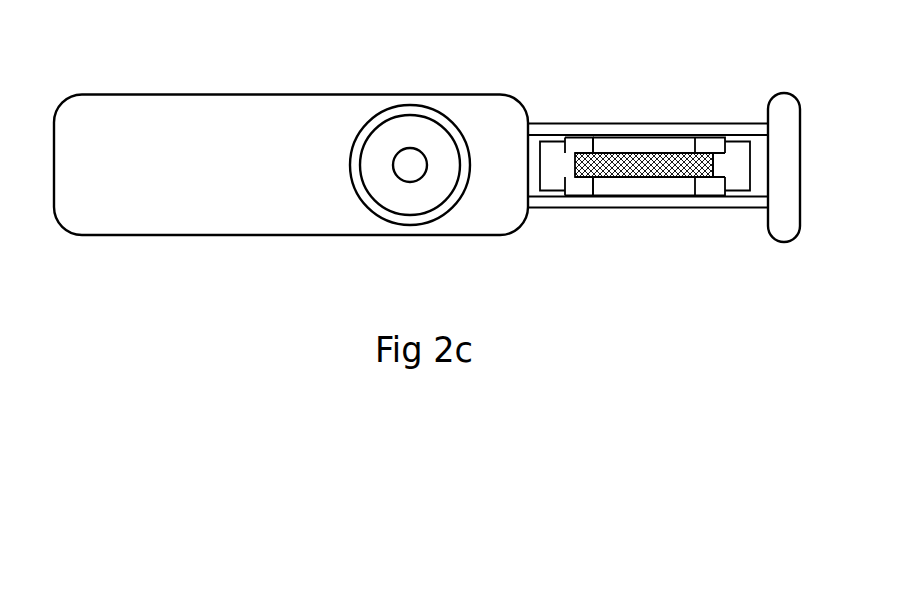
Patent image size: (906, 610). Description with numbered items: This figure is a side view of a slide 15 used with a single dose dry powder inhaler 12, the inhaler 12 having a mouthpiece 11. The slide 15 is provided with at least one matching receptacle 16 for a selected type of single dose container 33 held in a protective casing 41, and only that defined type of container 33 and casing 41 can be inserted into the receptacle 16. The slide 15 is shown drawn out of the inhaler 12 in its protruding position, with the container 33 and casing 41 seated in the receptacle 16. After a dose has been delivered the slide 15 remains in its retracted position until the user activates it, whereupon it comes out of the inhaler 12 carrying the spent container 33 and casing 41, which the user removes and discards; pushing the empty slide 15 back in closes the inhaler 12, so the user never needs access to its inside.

The inhaler 12 is at (230, 160).
The mouthpiece 11 is at (398, 143).
The single dose container 33 is at (638, 160).
The protective casing 41 is at (697, 140).
The matching receptacle 16 is at (552, 162).
The slide 15 is at (775, 180).